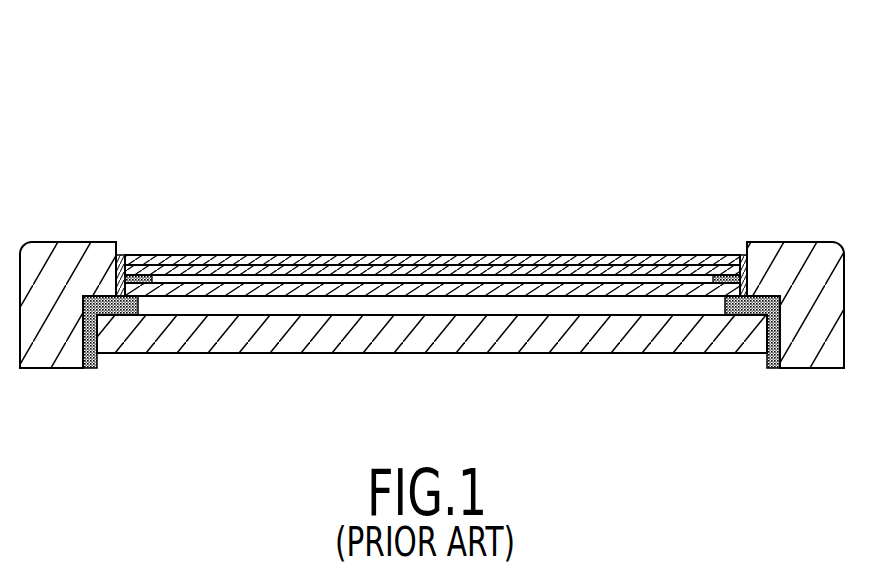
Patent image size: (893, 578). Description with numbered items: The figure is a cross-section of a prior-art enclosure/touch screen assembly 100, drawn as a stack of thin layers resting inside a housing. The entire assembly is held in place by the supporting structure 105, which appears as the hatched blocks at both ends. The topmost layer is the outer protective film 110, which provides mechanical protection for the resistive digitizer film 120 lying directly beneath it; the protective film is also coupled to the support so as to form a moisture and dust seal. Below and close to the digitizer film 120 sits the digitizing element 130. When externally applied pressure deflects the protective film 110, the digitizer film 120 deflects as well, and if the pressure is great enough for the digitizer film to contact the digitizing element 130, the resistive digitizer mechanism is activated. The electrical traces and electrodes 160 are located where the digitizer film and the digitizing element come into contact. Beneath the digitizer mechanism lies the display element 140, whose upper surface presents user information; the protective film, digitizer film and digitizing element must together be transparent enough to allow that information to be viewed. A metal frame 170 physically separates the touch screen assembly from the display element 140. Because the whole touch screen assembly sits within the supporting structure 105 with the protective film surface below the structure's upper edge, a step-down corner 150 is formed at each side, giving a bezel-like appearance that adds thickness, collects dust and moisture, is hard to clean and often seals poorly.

The enclosure/touch screen assembly 100 is at (467, 49).
The supporting structure 105 is at (61, 250).
The outer protective film 110 is at (338, 260).
The resistive digitizer film 120 is at (427, 270).
The digitizing element 130 is at (522, 288).
The display element 140 is at (627, 345).
The step-down corner 150 is at (121, 257).
The electrical traces and electrodes 160 is at (152, 277).
The metal frame 170 is at (98, 363).